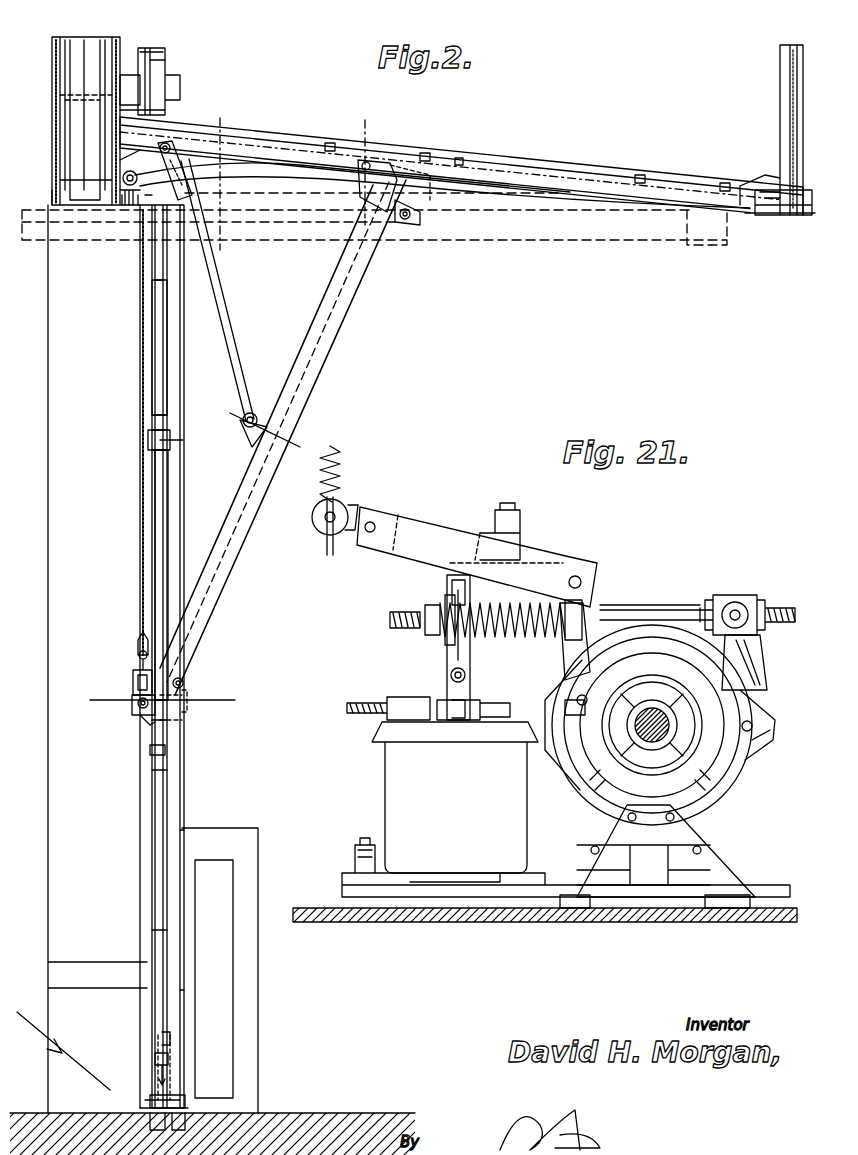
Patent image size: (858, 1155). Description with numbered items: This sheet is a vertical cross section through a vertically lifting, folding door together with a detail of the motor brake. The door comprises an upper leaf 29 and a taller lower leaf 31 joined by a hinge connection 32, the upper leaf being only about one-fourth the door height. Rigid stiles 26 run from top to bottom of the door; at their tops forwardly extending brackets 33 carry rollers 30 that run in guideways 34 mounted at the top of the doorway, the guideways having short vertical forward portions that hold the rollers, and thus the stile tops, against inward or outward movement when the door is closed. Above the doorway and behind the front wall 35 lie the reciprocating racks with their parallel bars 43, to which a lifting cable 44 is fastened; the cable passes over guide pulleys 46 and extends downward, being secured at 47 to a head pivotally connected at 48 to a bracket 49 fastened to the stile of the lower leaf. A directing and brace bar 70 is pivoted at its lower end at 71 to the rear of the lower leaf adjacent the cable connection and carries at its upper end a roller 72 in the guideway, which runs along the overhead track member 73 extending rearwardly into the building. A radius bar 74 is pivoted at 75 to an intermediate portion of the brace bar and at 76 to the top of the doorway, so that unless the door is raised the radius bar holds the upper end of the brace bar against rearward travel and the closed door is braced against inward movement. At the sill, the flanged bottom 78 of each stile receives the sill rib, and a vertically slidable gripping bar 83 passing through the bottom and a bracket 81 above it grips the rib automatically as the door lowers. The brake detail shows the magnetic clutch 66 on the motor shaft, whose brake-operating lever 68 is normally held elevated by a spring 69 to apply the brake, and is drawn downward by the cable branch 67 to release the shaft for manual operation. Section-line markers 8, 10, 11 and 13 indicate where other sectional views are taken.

In FIG. 2, the section line 8- 8 is at (240, 123).
In FIG. 2, the section line 10- 10 is at (375, 129).
In FIG. 2, the section line 11- 11 is at (271, 428).
In FIG. 2, the section line 13- 13 is at (90, 693).
In FIG. 2, the stiles 26 is at (148, 768).
In FIG. 2, the upper leaf 29 is at (145, 343).
In FIG. 2, the rollers 30 is at (128, 205).
In FIG. 2, the lower leaf 31 is at (160, 527).
In FIG. 2, the hinge connection 32 is at (142, 445).
In FIG. 2, the brackets 33 is at (145, 203).
In FIG. 2, the guideways 34 is at (128, 168).
In FIG. 2, the front wall 35 is at (58, 172).
In FIG. 2, the parallel bars 43 is at (153, 42).
In FIG. 2, the lifting cable 44 is at (143, 578).
In FIG. 2, the guide pulleys 46 is at (158, 62).
In FIG. 2, the cable securement 47 is at (133, 680).
In FIG. 2, the pivotal connection 48 is at (134, 708).
In FIG. 2, the brackets 49 is at (145, 718).
In FIG. 21, the magnetic clutch 66 is at (690, 651).
In FIG. 21, the cable branch 67 is at (327, 540).
In FIG. 21, the brake-operating lever 68 is at (416, 526).
In FIG. 21, the spring 69 is at (343, 465).
In FIG. 2, the directing and brace bars 70 is at (566, 238).
In FIG. 2, the pivot 71 is at (184, 683).
In FIG. 2, the rollers 72 is at (357, 166).
In FIG. 2, the horizontal beam 73 is at (462, 172).
In FIG. 2, the radius bars 74 is at (220, 308).
In FIG. 2, the pivot 75 is at (253, 412).
In FIG. 2, the pivot 76 is at (168, 144).
In FIG. 2, the flanged bottoms 78 is at (178, 1096).
In FIG. 2, the bracket 81 is at (175, 1060).
In FIG. 2, the gripping bar 83 is at (170, 1045).